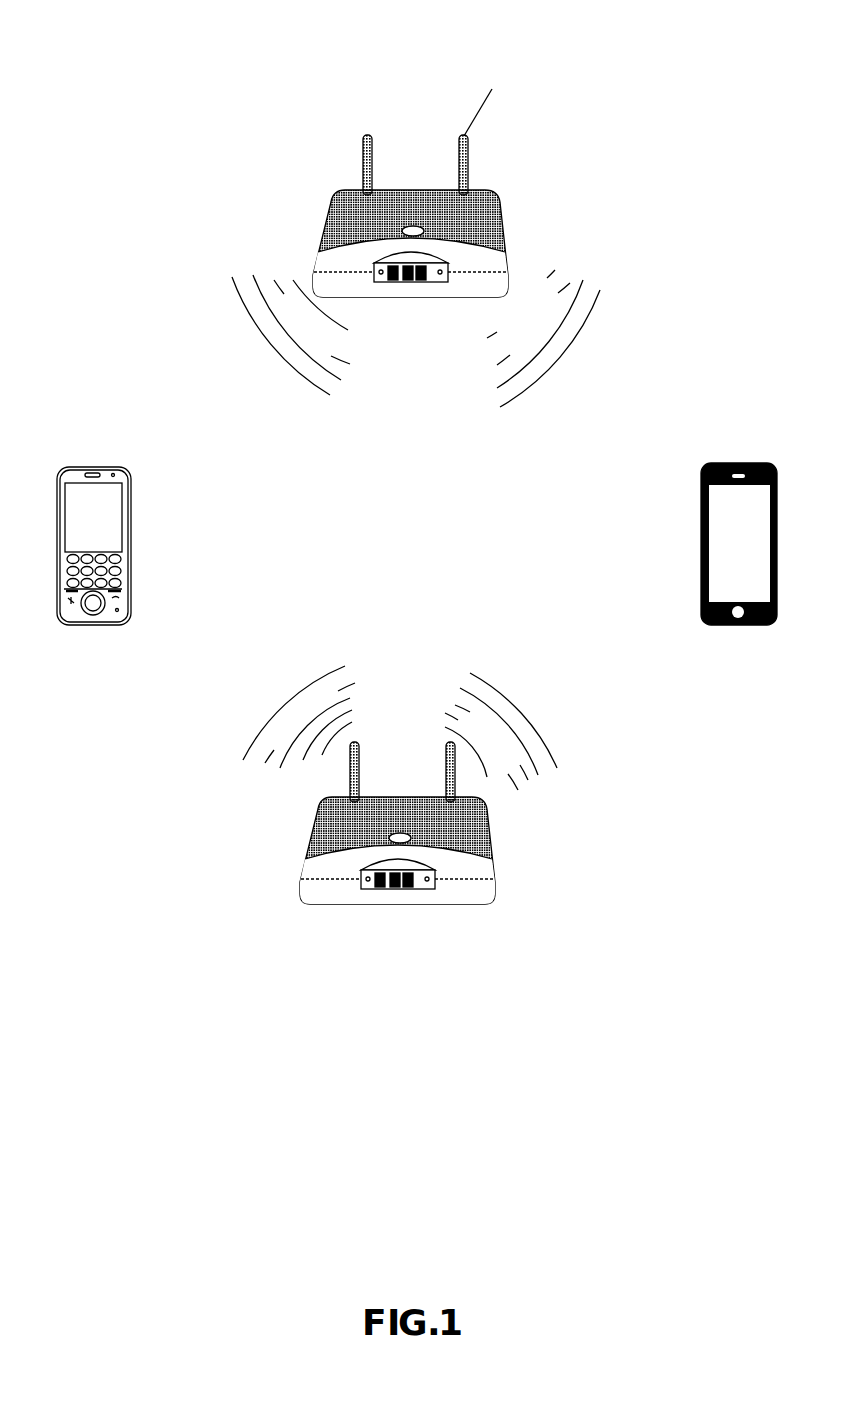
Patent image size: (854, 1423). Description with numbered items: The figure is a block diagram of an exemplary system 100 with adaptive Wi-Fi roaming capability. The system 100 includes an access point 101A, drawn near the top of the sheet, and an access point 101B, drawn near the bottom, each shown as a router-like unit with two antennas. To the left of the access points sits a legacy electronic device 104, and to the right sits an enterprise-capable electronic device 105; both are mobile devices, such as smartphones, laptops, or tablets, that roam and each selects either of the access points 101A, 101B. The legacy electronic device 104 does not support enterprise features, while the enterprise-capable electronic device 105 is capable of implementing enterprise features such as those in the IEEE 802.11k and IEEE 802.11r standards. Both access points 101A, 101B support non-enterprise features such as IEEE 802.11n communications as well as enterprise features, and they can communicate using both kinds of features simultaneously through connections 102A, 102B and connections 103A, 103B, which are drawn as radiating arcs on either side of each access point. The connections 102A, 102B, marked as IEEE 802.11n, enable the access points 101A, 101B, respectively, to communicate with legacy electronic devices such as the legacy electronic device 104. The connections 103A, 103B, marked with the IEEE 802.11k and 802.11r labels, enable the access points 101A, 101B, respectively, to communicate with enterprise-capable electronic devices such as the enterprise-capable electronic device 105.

The system 100 is at (719, 57).
The access point 101A is at (404, 188).
The access point 101B is at (390, 797).
The connection 102A is at (308, 380).
The connection 102B is at (260, 762).
The connection 103A is at (563, 343).
The connection 103B is at (537, 778).
The legacy electronic device 104 is at (93, 627).
The enterprise-capable electronic device 105 is at (724, 627).